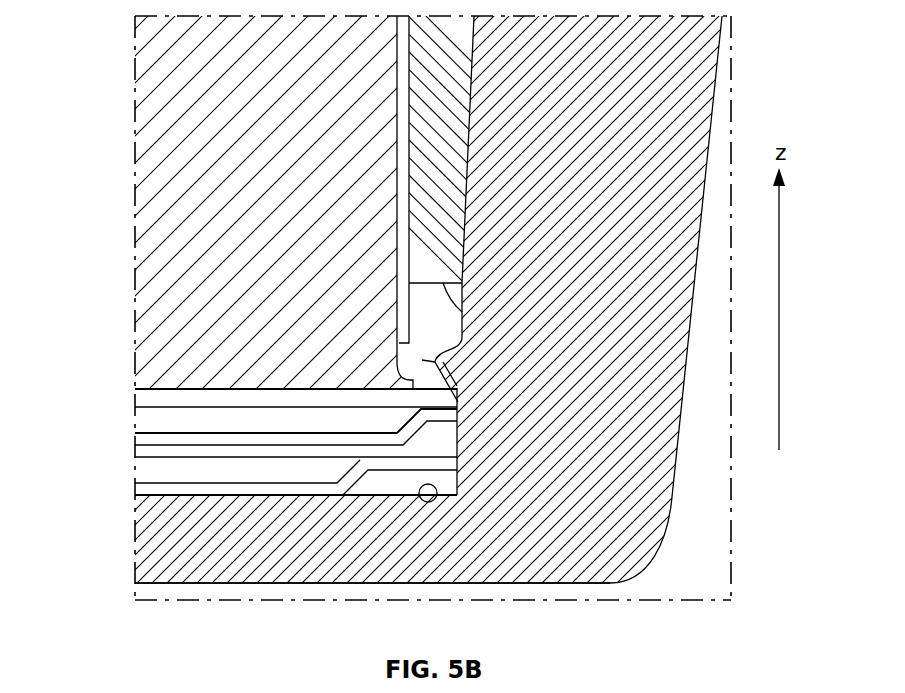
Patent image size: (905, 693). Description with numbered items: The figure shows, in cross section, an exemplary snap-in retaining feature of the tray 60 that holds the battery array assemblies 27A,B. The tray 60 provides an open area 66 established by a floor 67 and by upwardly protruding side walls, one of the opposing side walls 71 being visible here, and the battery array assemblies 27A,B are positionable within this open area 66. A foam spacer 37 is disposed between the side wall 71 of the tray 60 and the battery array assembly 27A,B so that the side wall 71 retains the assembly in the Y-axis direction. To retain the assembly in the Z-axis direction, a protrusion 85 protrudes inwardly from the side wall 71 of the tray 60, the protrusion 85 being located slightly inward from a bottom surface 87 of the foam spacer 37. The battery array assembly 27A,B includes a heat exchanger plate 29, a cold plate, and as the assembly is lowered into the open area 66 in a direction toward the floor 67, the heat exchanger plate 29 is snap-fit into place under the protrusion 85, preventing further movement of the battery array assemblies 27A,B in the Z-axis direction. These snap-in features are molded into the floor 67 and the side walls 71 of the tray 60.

The first and second battery array assemblies 27A,B is at (208, 113).
The opposing side wall 71 is at (703, 105).
The foam spacer 37 is at (454, 200).
The bottom surface 87 is at (470, 311).
The protrusion 85 is at (466, 360).
The open area 66 is at (459, 383).
The heat exchanger plate 29 is at (389, 402).
The floor 67 is at (425, 503).
The tray 60 is at (350, 576).